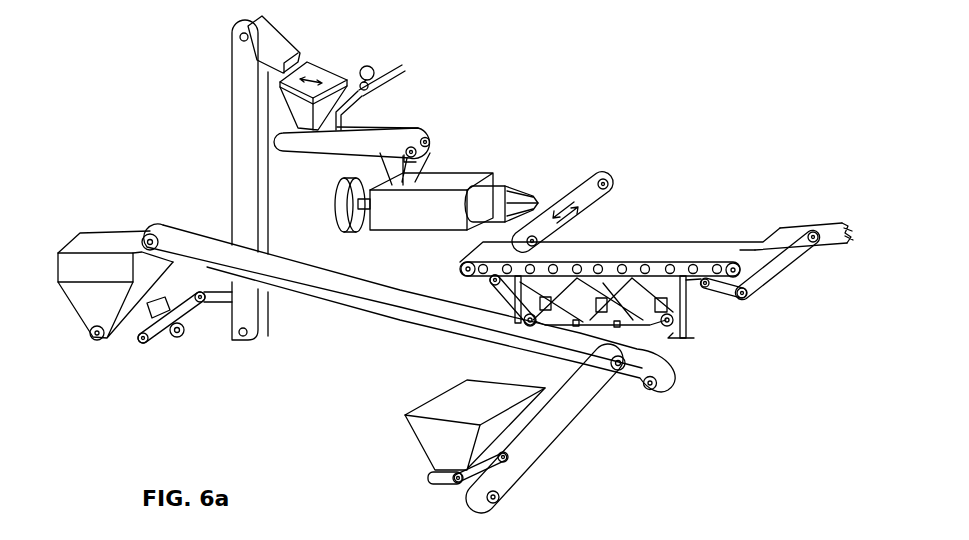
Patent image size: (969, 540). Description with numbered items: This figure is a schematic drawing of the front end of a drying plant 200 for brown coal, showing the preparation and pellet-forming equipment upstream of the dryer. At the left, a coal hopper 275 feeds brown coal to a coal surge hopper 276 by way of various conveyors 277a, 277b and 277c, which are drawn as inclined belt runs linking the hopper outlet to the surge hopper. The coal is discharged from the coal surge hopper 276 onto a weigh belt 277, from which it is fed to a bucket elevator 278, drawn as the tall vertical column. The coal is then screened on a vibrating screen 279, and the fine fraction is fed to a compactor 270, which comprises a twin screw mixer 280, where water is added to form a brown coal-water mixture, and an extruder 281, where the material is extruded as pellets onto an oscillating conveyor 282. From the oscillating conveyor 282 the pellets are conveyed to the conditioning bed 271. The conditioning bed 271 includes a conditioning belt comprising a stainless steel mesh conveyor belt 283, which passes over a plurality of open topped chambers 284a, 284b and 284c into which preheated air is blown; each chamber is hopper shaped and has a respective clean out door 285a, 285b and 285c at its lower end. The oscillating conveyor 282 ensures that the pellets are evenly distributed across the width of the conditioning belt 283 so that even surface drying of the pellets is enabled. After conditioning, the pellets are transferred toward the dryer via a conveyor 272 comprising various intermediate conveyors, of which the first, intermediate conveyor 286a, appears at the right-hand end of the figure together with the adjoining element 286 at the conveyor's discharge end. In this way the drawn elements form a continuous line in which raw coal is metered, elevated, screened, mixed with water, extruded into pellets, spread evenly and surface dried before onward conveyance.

The drying plant 200 is at (267, 383).
The compactor 270 is at (453, 108).
The conditioning bed 271 is at (660, 197).
The conveyor 272 is at (825, 222).
The coal hopper 275 is at (448, 442).
The coal surge hopper 276 is at (112, 245).
The weigh belt 277 is at (124, 345).
The conveyor 277a is at (428, 477).
The conveyor 277b is at (527, 443).
The conveyor 277c is at (383, 293).
The bucket elevator 278 is at (240, 117).
The vibrating screen 279 is at (312, 72).
The twin screw mixer 280 is at (363, 128).
The extruder 281 is at (500, 192).
The oscillating conveyor 282 is at (588, 182).
The stainless steel mesh conveyor belt 283 is at (650, 249).
The open topped chamber 284a is at (490, 279).
The open topped chamber 284b is at (650, 323).
The open topped chamber 284c is at (695, 297).
The clean out door 285a is at (533, 327).
The clean out door 285b is at (648, 385).
The clean out door 285c is at (660, 290).
The scraper 286 is at (848, 248).
The intermediate conveyor 286a is at (775, 258).